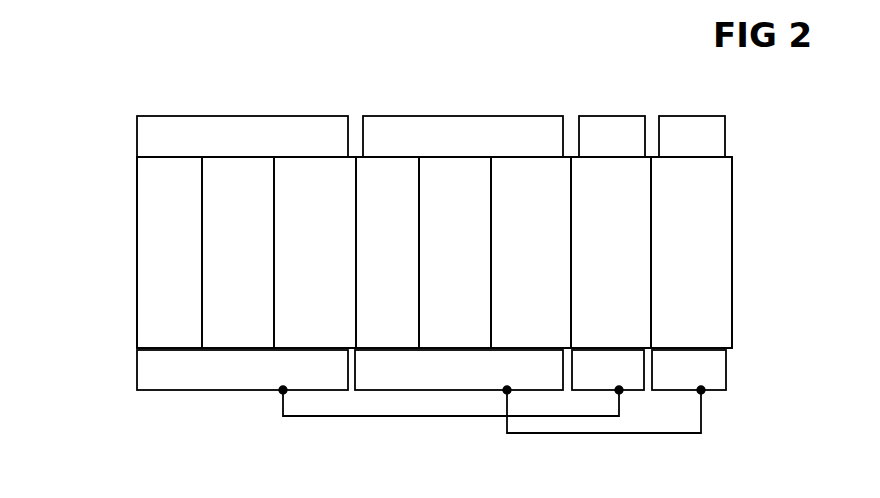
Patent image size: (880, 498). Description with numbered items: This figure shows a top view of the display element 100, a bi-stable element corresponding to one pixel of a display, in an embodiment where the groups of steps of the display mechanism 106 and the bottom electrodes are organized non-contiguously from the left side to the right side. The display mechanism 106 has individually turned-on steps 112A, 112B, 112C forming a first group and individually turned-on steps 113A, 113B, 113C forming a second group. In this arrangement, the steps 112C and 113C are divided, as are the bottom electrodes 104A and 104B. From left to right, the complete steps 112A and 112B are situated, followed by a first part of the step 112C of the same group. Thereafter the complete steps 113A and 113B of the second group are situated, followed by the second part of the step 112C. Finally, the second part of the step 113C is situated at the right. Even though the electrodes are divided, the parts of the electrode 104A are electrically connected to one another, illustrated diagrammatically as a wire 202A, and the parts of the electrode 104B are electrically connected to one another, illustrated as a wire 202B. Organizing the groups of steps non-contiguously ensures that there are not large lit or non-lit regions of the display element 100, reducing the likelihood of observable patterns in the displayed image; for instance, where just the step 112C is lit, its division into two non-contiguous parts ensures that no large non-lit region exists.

The display element 100 is at (93, 140).
The display mechanism 106 is at (137, 213).
The bottom electrode 104A is at (391, 253).
The bottom electrode 104B is at (540, 253).
The individually turned-on step 112A is at (169, 252).
The individually turned-on step 112B is at (238, 252).
The individually turned-on step 112C is at (462, 252).
The individually turned-on step 113A is at (387, 252).
The individually turned-on step 113B is at (455, 252).
The individually turned-on step 113C is at (611, 252).
The wire 202A is at (413, 417).
The wire 202B is at (610, 433).